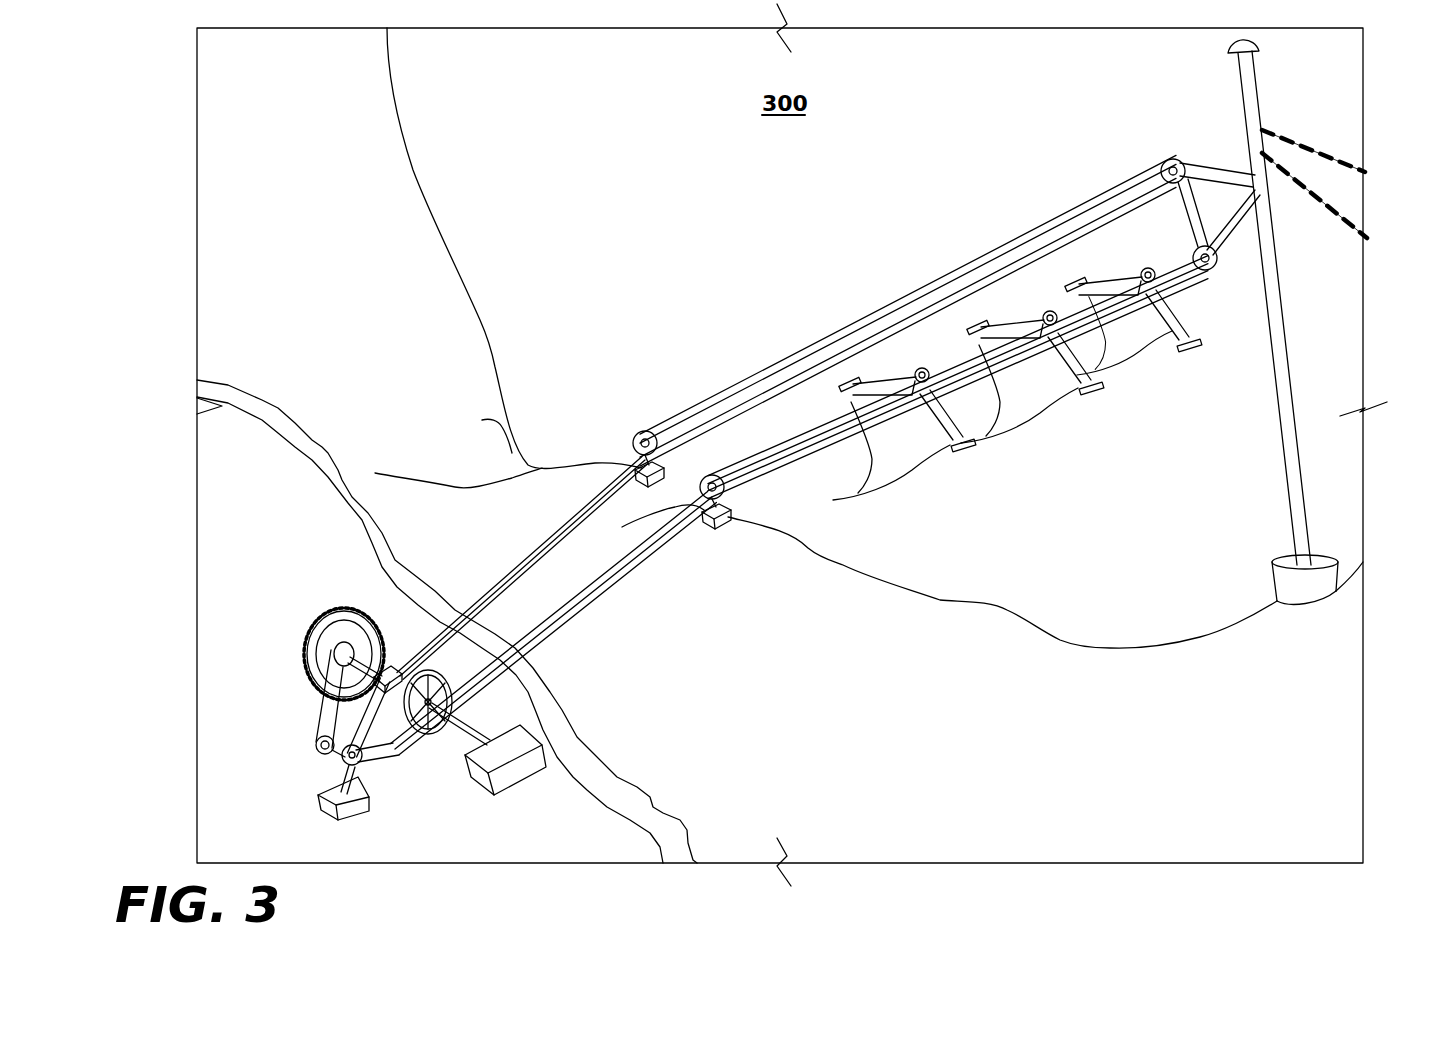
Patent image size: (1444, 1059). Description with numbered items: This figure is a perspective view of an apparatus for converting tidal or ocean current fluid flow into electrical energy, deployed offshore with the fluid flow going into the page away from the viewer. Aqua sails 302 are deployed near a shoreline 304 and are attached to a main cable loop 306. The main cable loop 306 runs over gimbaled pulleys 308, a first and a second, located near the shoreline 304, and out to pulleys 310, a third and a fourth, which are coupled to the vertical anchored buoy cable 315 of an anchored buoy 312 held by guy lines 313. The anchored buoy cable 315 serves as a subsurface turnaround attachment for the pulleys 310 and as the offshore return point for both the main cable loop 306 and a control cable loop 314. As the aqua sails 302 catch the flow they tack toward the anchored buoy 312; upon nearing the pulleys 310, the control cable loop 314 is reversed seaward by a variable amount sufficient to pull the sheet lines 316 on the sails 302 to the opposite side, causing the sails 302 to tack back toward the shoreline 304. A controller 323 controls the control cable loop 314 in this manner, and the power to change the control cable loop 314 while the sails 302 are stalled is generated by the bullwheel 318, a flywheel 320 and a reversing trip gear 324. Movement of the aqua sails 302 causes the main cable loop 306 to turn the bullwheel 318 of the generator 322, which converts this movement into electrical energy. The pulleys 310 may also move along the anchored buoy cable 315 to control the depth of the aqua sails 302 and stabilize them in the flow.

The aqua sails 302 is at (1016, 412).
The shoreline 304 is at (618, 758).
The main cable loop 306 is at (907, 414).
The gimbaled pulleys 308 is at (645, 437).
The pulleys 310 is at (1168, 165).
The anchored buoy 312 is at (1247, 48).
The guy lines 313 is at (1290, 133).
The control cable loop 314 is at (977, 262).
The anchored buoy cable 315 is at (1298, 508).
The sheet lines 316 is at (891, 451).
The bullwheel 318 is at (415, 722).
The flywheel 320 is at (352, 632).
The generator 322 is at (520, 750).
The controller 323 is at (318, 797).
The reversing trip gear 324 is at (382, 677).